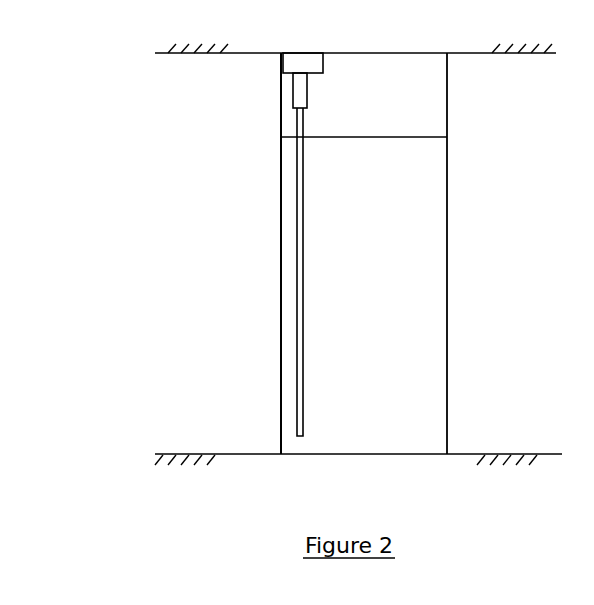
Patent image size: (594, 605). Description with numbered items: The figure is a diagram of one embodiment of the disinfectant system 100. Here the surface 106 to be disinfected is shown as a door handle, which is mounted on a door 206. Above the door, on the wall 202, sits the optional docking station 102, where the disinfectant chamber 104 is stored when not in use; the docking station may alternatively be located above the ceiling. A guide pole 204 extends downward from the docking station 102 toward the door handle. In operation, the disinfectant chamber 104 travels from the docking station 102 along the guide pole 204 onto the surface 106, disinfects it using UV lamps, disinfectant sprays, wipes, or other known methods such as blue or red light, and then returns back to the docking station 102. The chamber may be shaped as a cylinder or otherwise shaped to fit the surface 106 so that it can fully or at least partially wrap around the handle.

The disinfectant system 100 is at (103, 127).
The docking station 102 is at (329, 69).
The disinfectant chamber 104 is at (290, 92).
The surface 106 is at (308, 222).
The wall 202 is at (426, 123).
The guide pole 204 is at (290, 129).
The door 206 is at (421, 334).